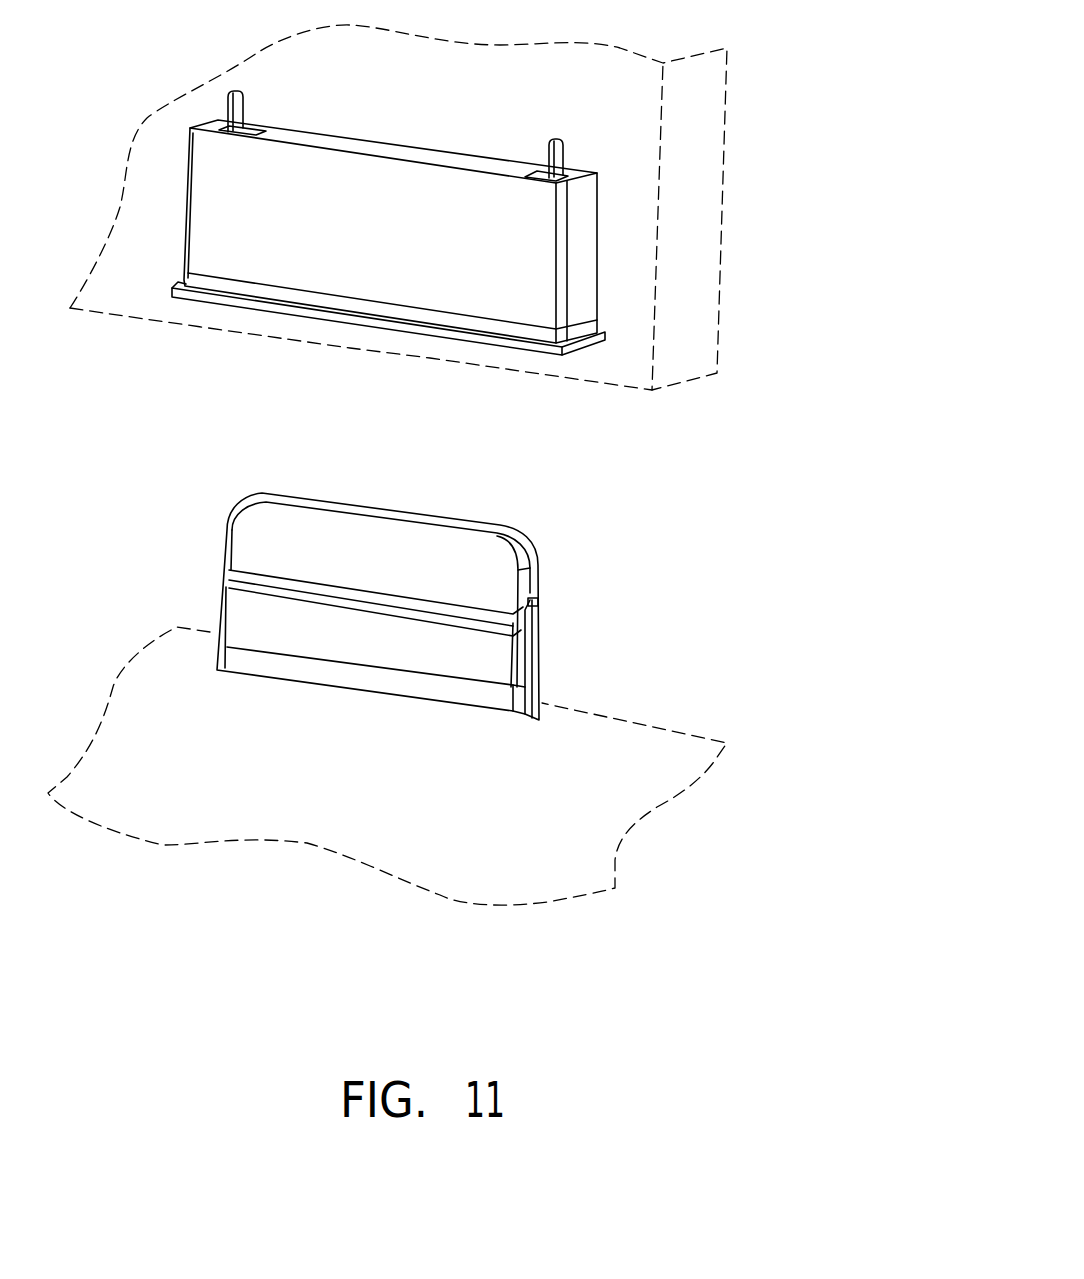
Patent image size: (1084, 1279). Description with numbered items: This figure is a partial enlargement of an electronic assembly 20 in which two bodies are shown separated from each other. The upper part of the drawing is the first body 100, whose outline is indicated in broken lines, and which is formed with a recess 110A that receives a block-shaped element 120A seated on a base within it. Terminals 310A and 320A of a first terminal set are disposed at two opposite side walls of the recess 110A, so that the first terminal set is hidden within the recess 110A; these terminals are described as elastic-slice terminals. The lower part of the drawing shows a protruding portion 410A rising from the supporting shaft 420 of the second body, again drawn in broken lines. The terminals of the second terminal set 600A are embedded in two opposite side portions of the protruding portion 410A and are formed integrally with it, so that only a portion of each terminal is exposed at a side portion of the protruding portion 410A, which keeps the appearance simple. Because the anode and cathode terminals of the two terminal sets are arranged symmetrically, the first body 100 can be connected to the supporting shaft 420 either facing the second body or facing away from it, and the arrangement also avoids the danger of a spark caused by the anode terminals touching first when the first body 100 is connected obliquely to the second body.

The first body 100 is at (688, 172).
The battery 120A is at (582, 248).
The terminal 310A is at (238, 102).
The terminal 320A is at (553, 138).
The recess 110A is at (590, 345).
The protruding portion 410A is at (268, 533).
The second terminal set 600A is at (530, 632).
The supporting shaft 420 is at (643, 795).
The electronic assembly 20 is at (744, 1040).